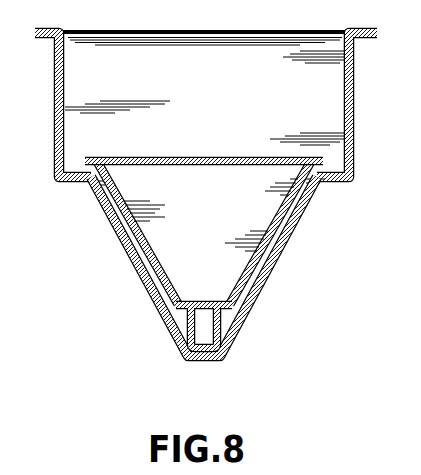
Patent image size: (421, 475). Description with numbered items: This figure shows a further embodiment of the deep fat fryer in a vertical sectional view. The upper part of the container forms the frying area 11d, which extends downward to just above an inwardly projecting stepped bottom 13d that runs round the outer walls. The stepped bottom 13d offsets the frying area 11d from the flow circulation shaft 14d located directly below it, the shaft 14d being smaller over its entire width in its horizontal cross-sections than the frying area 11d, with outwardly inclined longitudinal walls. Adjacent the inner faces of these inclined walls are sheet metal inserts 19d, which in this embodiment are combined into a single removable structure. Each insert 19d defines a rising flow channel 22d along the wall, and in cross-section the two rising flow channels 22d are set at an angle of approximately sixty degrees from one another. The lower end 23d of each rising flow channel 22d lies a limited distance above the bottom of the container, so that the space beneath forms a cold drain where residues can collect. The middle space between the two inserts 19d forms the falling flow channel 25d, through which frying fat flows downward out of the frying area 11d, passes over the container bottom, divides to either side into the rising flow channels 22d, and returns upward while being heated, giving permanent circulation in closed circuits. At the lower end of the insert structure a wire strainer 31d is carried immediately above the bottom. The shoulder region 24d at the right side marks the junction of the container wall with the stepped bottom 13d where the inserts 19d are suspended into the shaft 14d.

The frying area 11d is at (335, 107).
The stepped bottom 13d is at (73, 174).
The flow circulation shaft 14d is at (284, 308).
The insert 19d is at (278, 220).
The rising flow channel 22d is at (258, 290).
The lower end of flow channel 23d is at (180, 313).
The right bottom flange 24d is at (320, 168).
The falling flow channel 25d is at (205, 187).
The wire strainer 31d is at (222, 342).